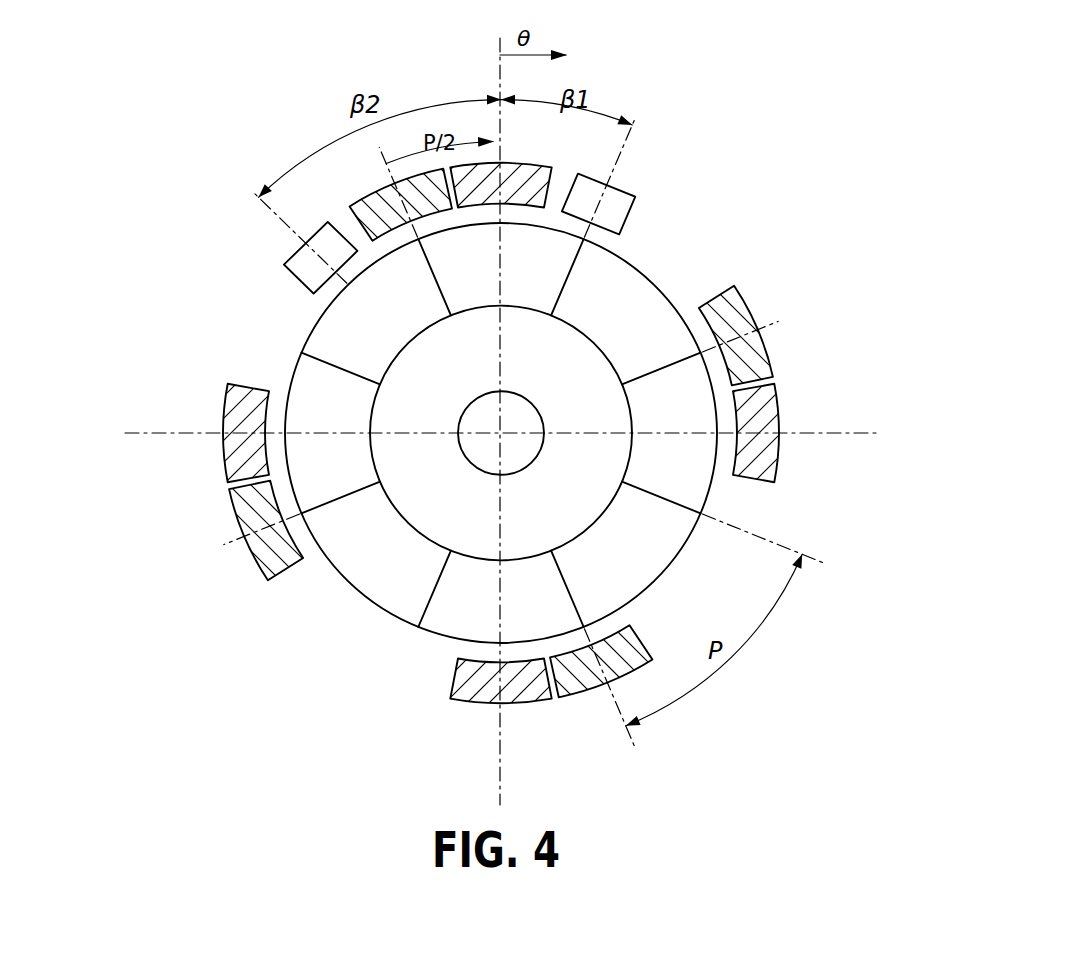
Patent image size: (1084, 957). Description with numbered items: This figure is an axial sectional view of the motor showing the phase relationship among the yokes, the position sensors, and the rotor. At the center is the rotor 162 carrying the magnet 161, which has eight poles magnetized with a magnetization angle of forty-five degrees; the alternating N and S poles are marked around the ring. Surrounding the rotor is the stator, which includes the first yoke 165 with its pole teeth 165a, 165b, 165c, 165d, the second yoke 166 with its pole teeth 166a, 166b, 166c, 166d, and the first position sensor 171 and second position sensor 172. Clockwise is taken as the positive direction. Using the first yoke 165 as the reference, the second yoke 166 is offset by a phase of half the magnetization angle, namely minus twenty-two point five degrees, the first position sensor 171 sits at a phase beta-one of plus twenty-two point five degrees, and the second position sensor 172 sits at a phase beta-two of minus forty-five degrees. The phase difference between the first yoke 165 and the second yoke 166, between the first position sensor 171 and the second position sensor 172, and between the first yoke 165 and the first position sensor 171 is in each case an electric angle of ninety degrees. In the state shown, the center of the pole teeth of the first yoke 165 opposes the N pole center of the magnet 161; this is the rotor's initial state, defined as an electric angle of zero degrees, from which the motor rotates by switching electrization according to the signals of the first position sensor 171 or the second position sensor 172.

The magnet 161 is at (687, 543).
The rotor 162 is at (542, 450).
The first yoke 165 is at (542, 450).
The pole tooth of the first yoke 165a is at (524, 163).
The pole tooth of the first yoke 165b is at (781, 407).
The pole tooth of the first yoke 165c is at (458, 677).
The pole tooth of the first yoke 165d is at (232, 401).
The second yoke 166 is at (542, 450).
The pole tooth of the second yoke 166a is at (377, 203).
The pole tooth of the second yoke 166b is at (750, 316).
The pole tooth of the second yoke 166c is at (626, 677).
The pole tooth of the second yoke 166d is at (244, 520).
The first position sensor 171 is at (627, 193).
The second position sensor 172 is at (284, 263).